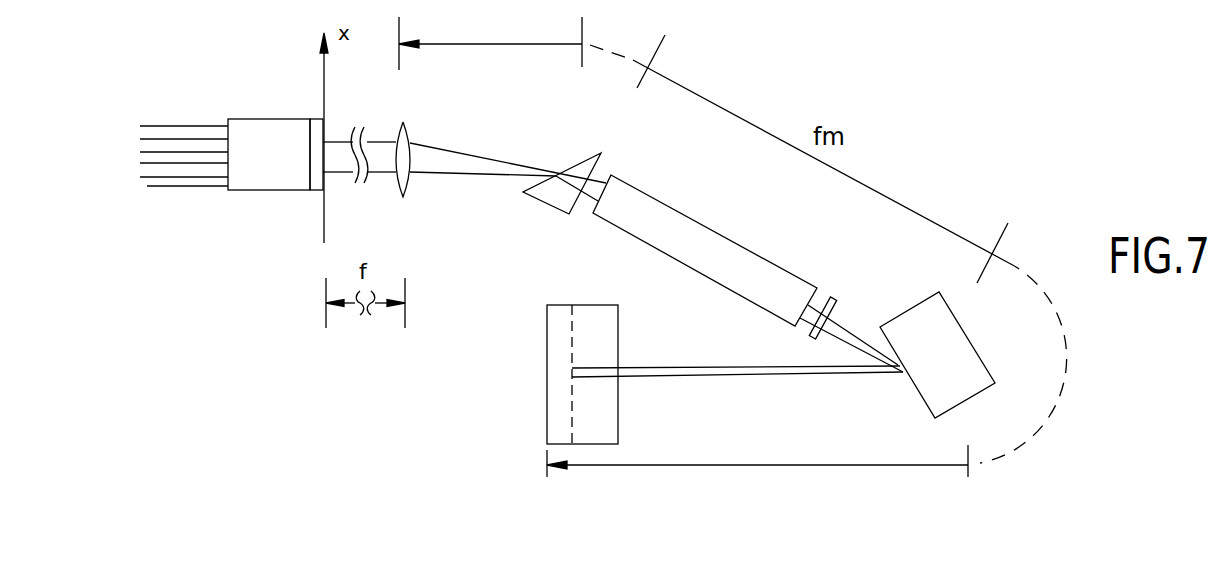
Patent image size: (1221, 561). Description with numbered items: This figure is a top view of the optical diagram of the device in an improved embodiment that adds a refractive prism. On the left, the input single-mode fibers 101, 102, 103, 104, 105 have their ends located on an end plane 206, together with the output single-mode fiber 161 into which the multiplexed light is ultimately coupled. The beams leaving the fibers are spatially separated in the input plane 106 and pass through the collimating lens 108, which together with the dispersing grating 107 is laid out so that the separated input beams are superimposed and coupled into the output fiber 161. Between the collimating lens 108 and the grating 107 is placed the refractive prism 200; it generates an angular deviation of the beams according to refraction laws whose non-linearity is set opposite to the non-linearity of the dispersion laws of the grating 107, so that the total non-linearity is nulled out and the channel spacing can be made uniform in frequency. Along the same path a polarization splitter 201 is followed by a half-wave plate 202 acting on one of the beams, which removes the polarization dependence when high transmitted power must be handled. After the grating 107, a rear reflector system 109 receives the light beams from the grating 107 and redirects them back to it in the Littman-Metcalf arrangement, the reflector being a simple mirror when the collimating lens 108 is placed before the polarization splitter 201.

The output single-mode fiber 161 is at (142, 126).
The input single-mode fiber 101 is at (140, 139).
The input single-mode fiber 102 is at (140, 152).
The input single-mode fiber 103 is at (140, 163).
The input single-mode fiber 104 is at (140, 177).
The input single-mode fiber 105 is at (148, 188).
The end plane 206 is at (306, 140).
The input plane 106 is at (324, 87).
The collimating lens 108 is at (410, 123).
The refractive prism 200 is at (600, 152).
The polarization splitter 201 is at (712, 229).
The half-wave plate 202 is at (838, 299).
The grating 107 is at (927, 411).
The rear reflector system 109 is at (619, 400).